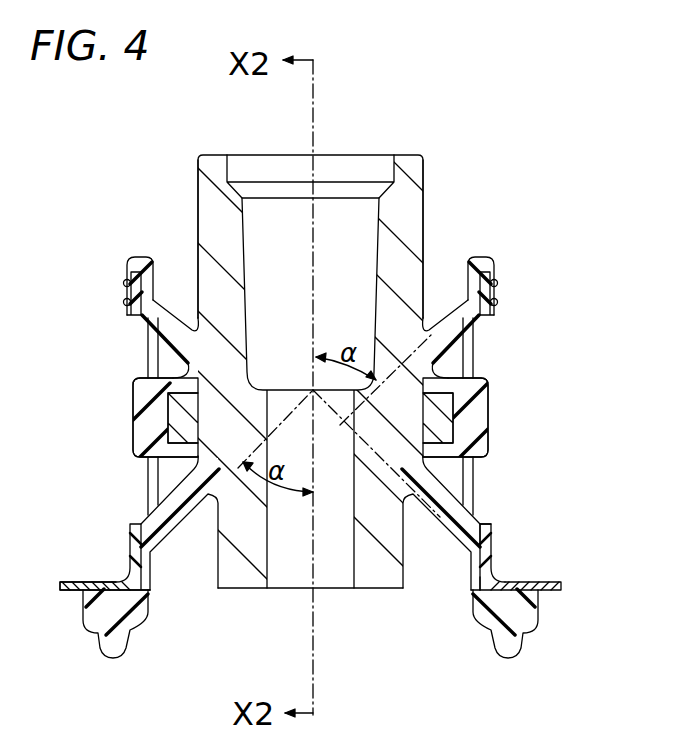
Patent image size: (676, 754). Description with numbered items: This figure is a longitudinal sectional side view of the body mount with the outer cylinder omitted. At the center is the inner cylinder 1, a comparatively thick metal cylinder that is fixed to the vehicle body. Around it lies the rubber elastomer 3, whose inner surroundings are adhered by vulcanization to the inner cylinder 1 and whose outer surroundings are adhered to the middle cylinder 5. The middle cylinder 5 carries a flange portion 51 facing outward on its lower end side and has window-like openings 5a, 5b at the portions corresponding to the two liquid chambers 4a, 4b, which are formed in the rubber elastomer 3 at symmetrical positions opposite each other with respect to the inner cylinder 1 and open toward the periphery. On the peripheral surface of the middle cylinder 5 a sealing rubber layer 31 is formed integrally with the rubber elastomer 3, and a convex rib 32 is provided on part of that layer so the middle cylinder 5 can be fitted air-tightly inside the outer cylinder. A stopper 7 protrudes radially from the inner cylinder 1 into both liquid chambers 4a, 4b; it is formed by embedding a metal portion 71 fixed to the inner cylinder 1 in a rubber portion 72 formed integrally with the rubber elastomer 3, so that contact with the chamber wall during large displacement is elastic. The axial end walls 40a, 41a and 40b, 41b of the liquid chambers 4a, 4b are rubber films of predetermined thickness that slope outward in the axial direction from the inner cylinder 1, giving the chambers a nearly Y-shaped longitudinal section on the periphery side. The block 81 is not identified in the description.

The inner cylinder 1 is at (402, 192).
The rubber elastomer 3 is at (187, 362).
The liquid chamber 4a is at (452, 358).
The liquid chamber 4b is at (167, 482).
The middle cylinder 5 is at (493, 547).
The window-like opening 5a is at (489, 520).
The window-like opening 5b is at (140, 317).
The stopper 7 is at (60, 377).
The rubber layer 31 is at (492, 262).
The convex rib 32 is at (497, 296).
The end wall 40a is at (456, 318).
The end wall 40b is at (165, 318).
The end wall 41a is at (443, 503).
The end wall 41b is at (178, 522).
The flange portion 51 is at (563, 584).
The metal portion 71 is at (176, 432).
The rubber portion 72 is at (134, 398).
The lower block 81 is at (517, 612).